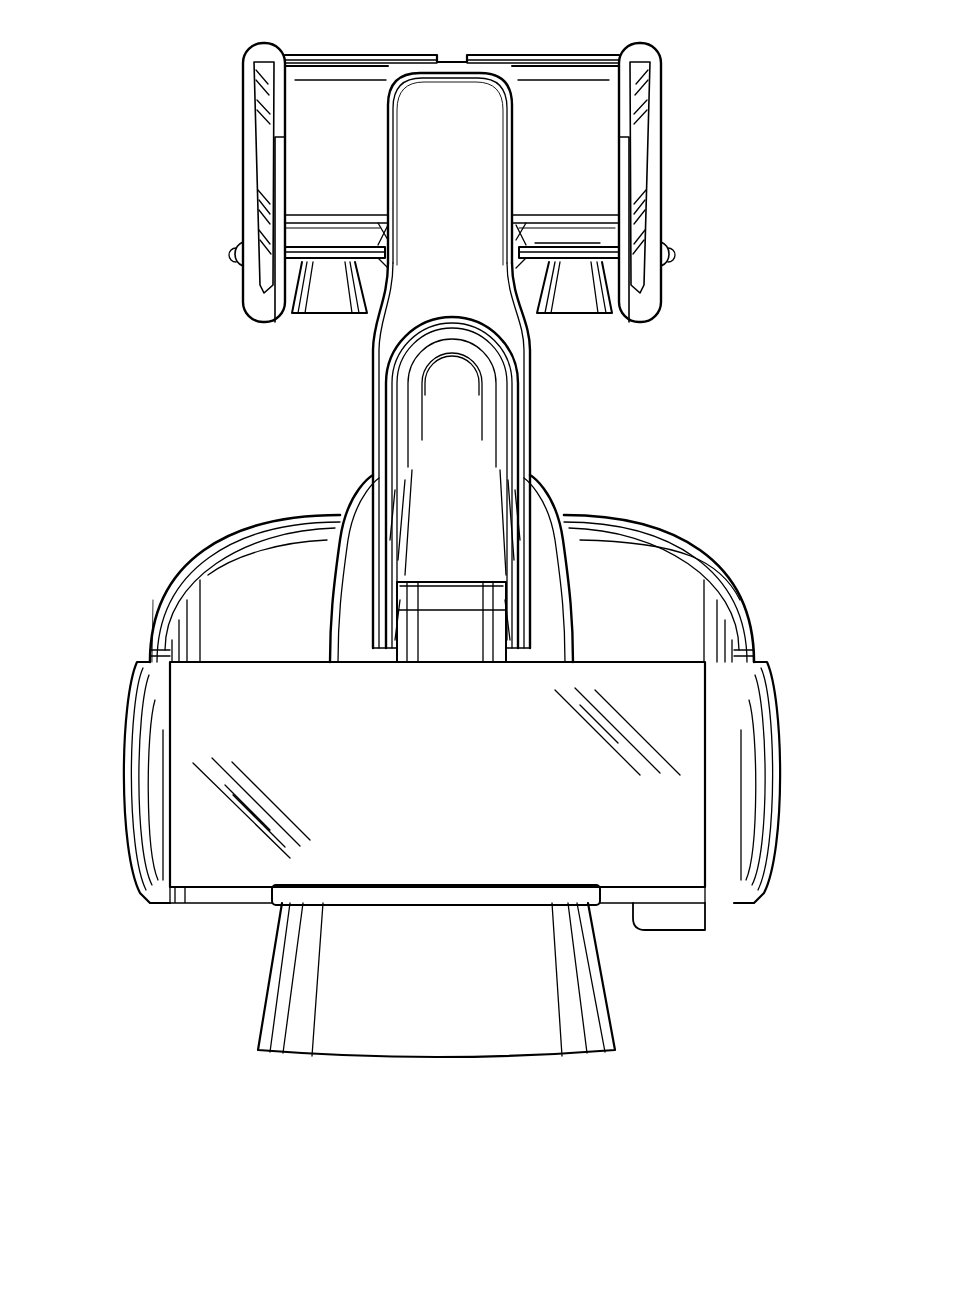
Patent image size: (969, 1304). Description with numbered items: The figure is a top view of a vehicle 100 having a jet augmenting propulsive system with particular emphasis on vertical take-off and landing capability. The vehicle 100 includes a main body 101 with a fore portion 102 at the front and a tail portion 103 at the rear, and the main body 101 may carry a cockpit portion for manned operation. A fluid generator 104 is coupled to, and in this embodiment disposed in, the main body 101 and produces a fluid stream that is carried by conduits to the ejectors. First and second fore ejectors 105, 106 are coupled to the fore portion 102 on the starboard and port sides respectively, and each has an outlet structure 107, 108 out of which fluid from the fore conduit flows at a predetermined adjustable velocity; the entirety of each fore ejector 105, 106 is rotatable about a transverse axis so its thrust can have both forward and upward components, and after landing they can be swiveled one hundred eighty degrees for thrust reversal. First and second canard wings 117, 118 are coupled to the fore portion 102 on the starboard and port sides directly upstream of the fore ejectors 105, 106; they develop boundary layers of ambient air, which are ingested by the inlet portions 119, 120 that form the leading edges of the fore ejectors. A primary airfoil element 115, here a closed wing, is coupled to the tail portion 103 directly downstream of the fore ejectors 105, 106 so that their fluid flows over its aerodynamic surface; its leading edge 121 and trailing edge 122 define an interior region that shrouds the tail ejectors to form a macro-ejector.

The vehicle 100 is at (128, 99).
The main body 101 is at (563, 451).
The fore portion 102 is at (466, 269).
The tail portion 103 is at (466, 989).
The fluid generator 104 is at (425, 515).
The first fore ejector 105 is at (573, 300).
The second fore ejector 106 is at (317, 302).
The outlet structure 107 is at (560, 313).
The outlet structure 108 is at (323, 315).
The primary airfoil element 115 is at (466, 794).
The first canard wing 117 is at (577, 109).
The second canard wing 118 is at (371, 109).
The inlet portion 119 is at (598, 237).
The inlet portion 120 is at (325, 227).
The leading edge 121 is at (255, 668).
The trailing edge 122 is at (637, 912).